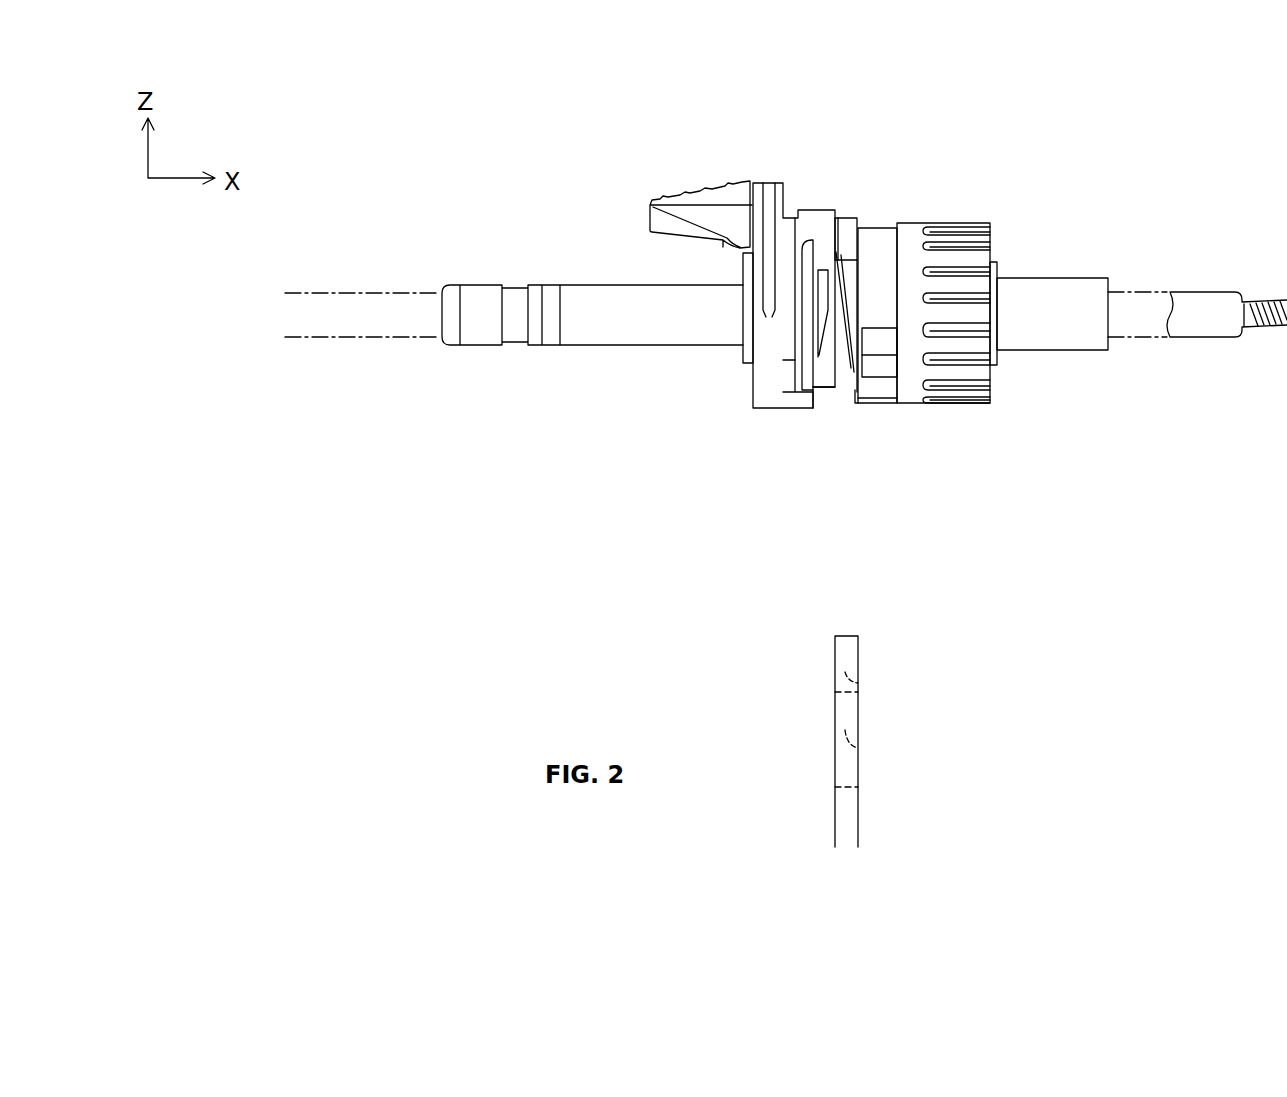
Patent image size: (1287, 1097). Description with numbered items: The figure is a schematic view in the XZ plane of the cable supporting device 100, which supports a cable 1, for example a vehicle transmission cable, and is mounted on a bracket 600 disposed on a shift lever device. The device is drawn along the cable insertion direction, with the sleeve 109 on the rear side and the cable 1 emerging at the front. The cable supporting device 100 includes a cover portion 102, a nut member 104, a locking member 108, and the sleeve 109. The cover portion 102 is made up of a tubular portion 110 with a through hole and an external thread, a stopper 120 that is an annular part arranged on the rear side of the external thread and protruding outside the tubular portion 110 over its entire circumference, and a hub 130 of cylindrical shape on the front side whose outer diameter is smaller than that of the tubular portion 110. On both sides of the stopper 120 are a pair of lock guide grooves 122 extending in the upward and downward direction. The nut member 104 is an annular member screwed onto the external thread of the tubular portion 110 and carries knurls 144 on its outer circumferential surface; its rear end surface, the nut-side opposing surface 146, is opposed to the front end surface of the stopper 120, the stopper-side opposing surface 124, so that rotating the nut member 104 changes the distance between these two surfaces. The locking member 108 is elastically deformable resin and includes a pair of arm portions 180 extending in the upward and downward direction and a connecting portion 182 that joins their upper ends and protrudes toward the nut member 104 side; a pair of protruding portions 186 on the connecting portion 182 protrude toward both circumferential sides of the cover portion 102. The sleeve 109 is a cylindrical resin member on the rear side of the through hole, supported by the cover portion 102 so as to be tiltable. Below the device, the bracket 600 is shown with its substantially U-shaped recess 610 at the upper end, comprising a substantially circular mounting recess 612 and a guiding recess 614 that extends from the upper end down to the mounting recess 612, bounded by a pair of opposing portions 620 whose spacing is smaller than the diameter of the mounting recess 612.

The cable 1 is at (1210, 300).
The cable supporting device 100 is at (1078, 136).
The cover portion 102 is at (1068, 493).
The nut member 104 is at (952, 170).
The locking member 108 is at (806, 201).
The sleeve 109 is at (558, 254).
The tubular portion 110 is at (995, 365).
The stopper 120 is at (803, 424).
The lock guide grooves 122 is at (783, 380).
The stopper-side opposing surface 124 is at (815, 398).
The hub 130 is at (1062, 345).
The knurls 144 is at (963, 262).
The nut-side opposing surface 146 is at (855, 393).
The arm portions 180 is at (783, 347).
The connecting portion 182 is at (840, 218).
The protruding portions 186 is at (852, 228).
The bracket 600 is at (783, 668).
The recess 610 is at (955, 672).
The mounting recess 612 is at (858, 748).
The guiding recess 614 is at (858, 683).
The opposing portions 620 is at (858, 645).